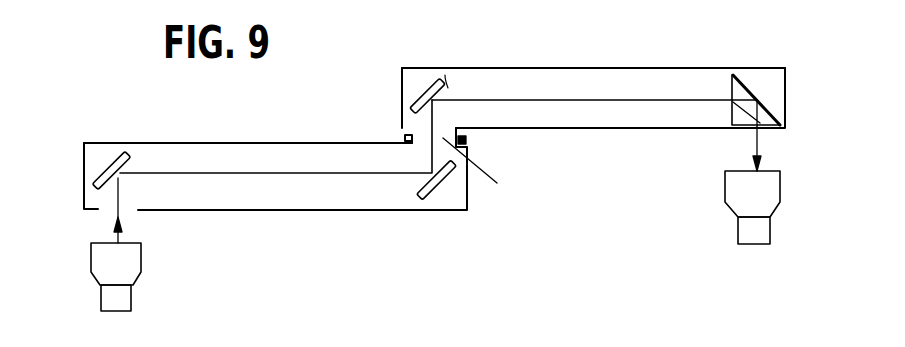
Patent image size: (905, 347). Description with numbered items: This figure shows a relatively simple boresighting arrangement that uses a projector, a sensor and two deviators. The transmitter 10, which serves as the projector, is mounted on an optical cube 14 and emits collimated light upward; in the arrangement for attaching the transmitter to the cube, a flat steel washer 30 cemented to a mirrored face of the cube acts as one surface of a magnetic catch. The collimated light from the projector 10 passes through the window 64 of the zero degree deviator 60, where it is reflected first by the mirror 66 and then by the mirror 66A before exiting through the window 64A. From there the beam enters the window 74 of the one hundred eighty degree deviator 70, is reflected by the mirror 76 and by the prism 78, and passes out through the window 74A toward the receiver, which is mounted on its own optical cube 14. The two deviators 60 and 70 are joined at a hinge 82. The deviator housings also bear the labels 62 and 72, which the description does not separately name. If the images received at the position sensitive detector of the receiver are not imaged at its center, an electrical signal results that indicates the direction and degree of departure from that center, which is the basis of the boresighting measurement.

The transmitter 10 is at (98, 259).
The optical cube 14 is at (108, 298).
The flat steel washer 30 is at (770, 193).
The zero degree deviator 60 is at (318, 138).
The housing wall 62 is at (243, 140).
The window 64 is at (127, 207).
The window 64A is at (491, 169).
The mirror 66 is at (133, 160).
The mirror 66A is at (418, 188).
The 180 degree deviator 70 is at (578, 68).
The housing wall 72 is at (714, 66).
The window 74 is at (412, 122).
The window 74A is at (762, 133).
The mirror 76 is at (448, 92).
The prism 78 is at (730, 70).
The hinge 82 is at (466, 140).